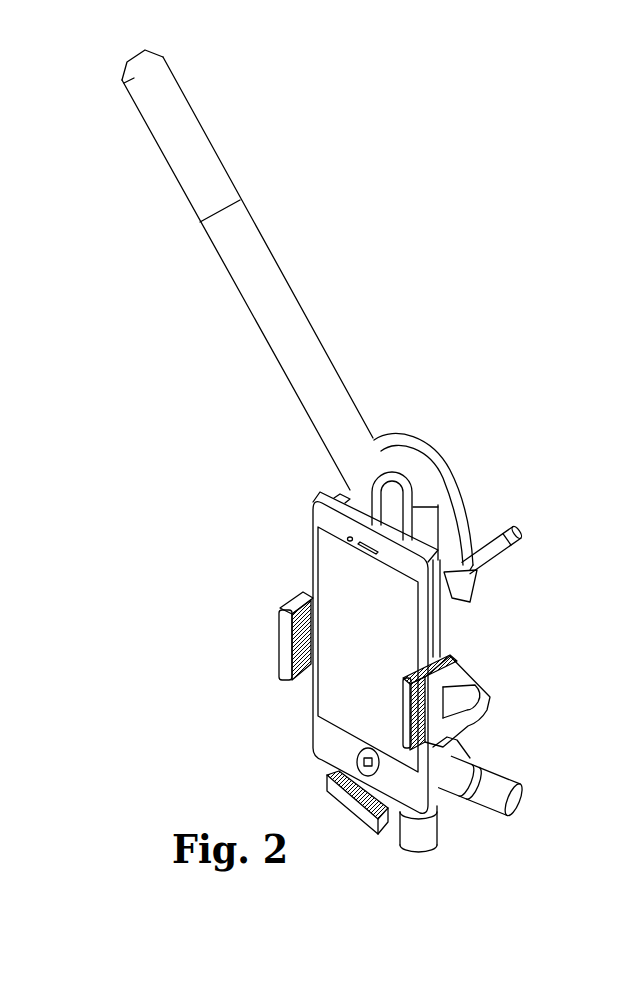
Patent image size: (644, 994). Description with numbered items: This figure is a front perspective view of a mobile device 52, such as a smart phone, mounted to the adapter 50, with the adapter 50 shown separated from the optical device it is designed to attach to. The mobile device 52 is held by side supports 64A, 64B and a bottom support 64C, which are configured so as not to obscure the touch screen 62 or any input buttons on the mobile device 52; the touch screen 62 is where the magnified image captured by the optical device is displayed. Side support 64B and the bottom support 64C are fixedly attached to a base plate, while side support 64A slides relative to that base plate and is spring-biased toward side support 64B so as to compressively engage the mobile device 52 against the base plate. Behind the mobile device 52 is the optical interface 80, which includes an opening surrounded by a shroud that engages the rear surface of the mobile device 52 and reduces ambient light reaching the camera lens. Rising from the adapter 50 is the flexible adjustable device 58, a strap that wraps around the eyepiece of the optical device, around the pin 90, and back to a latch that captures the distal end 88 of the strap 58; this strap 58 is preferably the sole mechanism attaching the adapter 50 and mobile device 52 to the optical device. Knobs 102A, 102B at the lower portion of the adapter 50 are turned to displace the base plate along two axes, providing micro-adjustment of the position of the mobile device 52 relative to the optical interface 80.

The adapter 50 is at (440, 462).
The mobile device 52 is at (322, 522).
The flexible adjustable device 58 is at (253, 306).
The touch screen 62 is at (325, 690).
The side support 64A is at (279, 628).
The side support 64B is at (445, 660).
The bottom support 64C is at (327, 793).
The optical interface 80 is at (377, 448).
The distal end 88 is at (150, 132).
The pin 90 is at (500, 556).
The knob 102A is at (437, 826).
The knob 102B is at (505, 778).